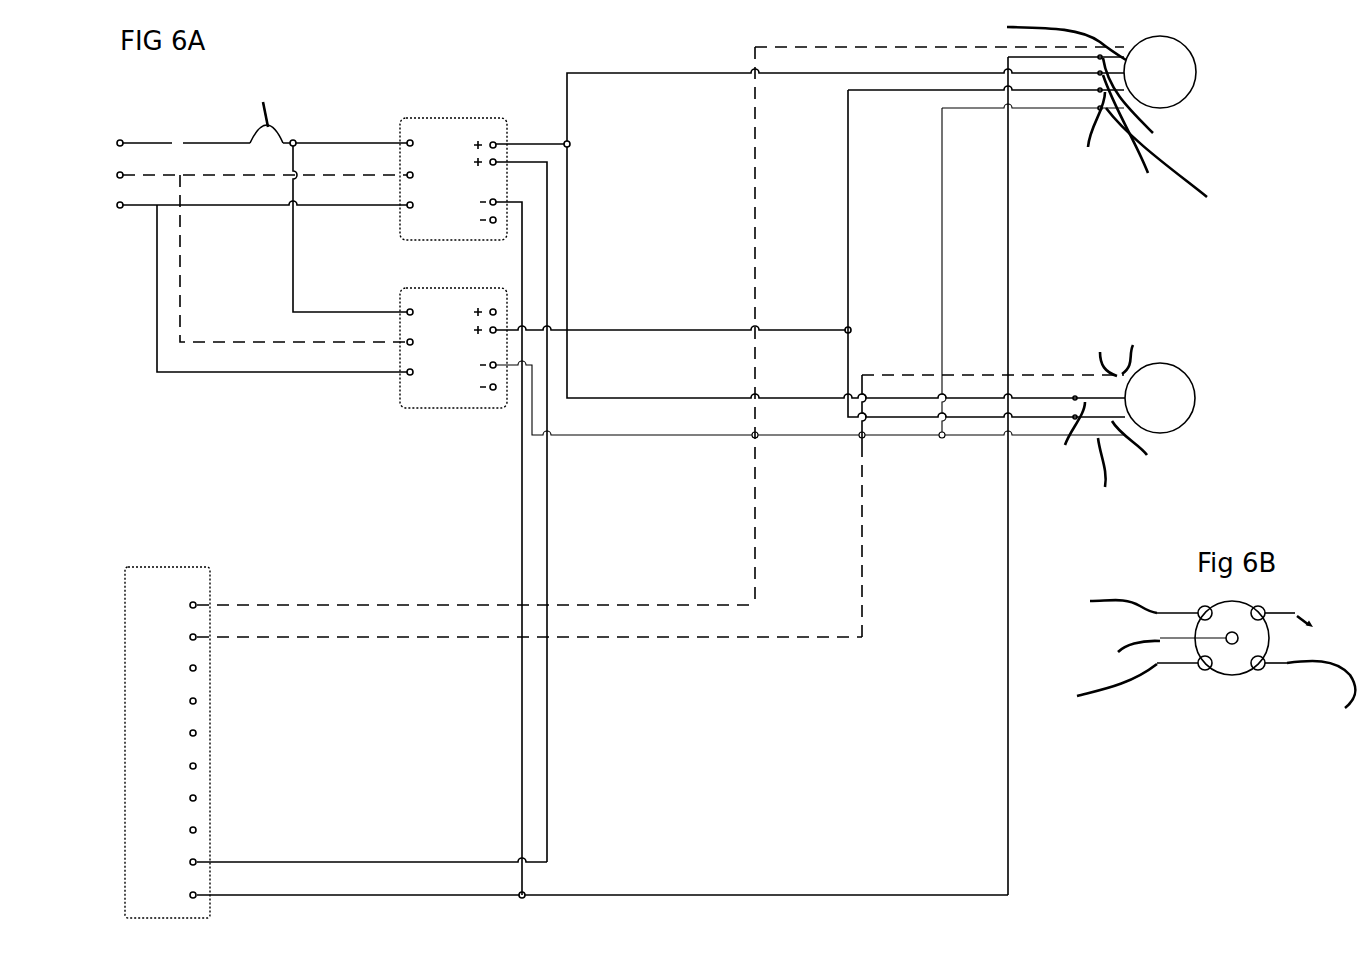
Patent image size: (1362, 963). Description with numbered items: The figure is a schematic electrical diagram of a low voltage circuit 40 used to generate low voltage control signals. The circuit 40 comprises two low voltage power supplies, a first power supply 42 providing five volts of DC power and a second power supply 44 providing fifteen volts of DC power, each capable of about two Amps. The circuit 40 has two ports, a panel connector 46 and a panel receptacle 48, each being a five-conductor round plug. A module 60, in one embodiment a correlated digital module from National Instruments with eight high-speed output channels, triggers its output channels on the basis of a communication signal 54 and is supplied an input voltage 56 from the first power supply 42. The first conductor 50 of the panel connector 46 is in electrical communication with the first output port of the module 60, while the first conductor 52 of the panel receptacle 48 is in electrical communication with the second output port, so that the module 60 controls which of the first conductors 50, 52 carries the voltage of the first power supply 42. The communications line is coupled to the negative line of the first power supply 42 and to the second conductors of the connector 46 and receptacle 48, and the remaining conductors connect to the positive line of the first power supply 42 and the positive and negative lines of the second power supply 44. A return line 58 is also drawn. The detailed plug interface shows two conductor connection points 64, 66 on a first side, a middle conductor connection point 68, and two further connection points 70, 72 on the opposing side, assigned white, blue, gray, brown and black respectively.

In FIG. 6A, the low voltage circuit 40 is at (345, 96).
In FIG. 6A, the first power supply 42 is at (430, 133).
In FIG. 6A, the second power supply 44 is at (437, 378).
In FIG. 6A, the panel connector 46 is at (1163, 82).
In FIG. 6A, the panel receptacle 48 is at (1150, 405).
In FIG. 6A, the first conductor of the panel connector 50 is at (818, 42).
In FIG. 6A, the first conductor of the panel receptacle 52 is at (723, 641).
In FIG. 6A, the communication signal 54 is at (148, 894).
In FIG. 6A, the input voltage 56 is at (397, 860).
In FIG. 6A, the return line 58 is at (1010, 178).
In FIG. 6A, the module 60 is at (140, 592).
In FIG. 6B, the conductor connection point 64 is at (1282, 608).
In FIG. 6B, the conductor connection point 66 is at (1288, 667).
In FIG. 6B, the middle conductor connection point 68 is at (1160, 632).
In FIG. 6B, the conductor connection point 70 is at (1173, 607).
In FIG. 6B, the conductor connection point 72 is at (1173, 667).